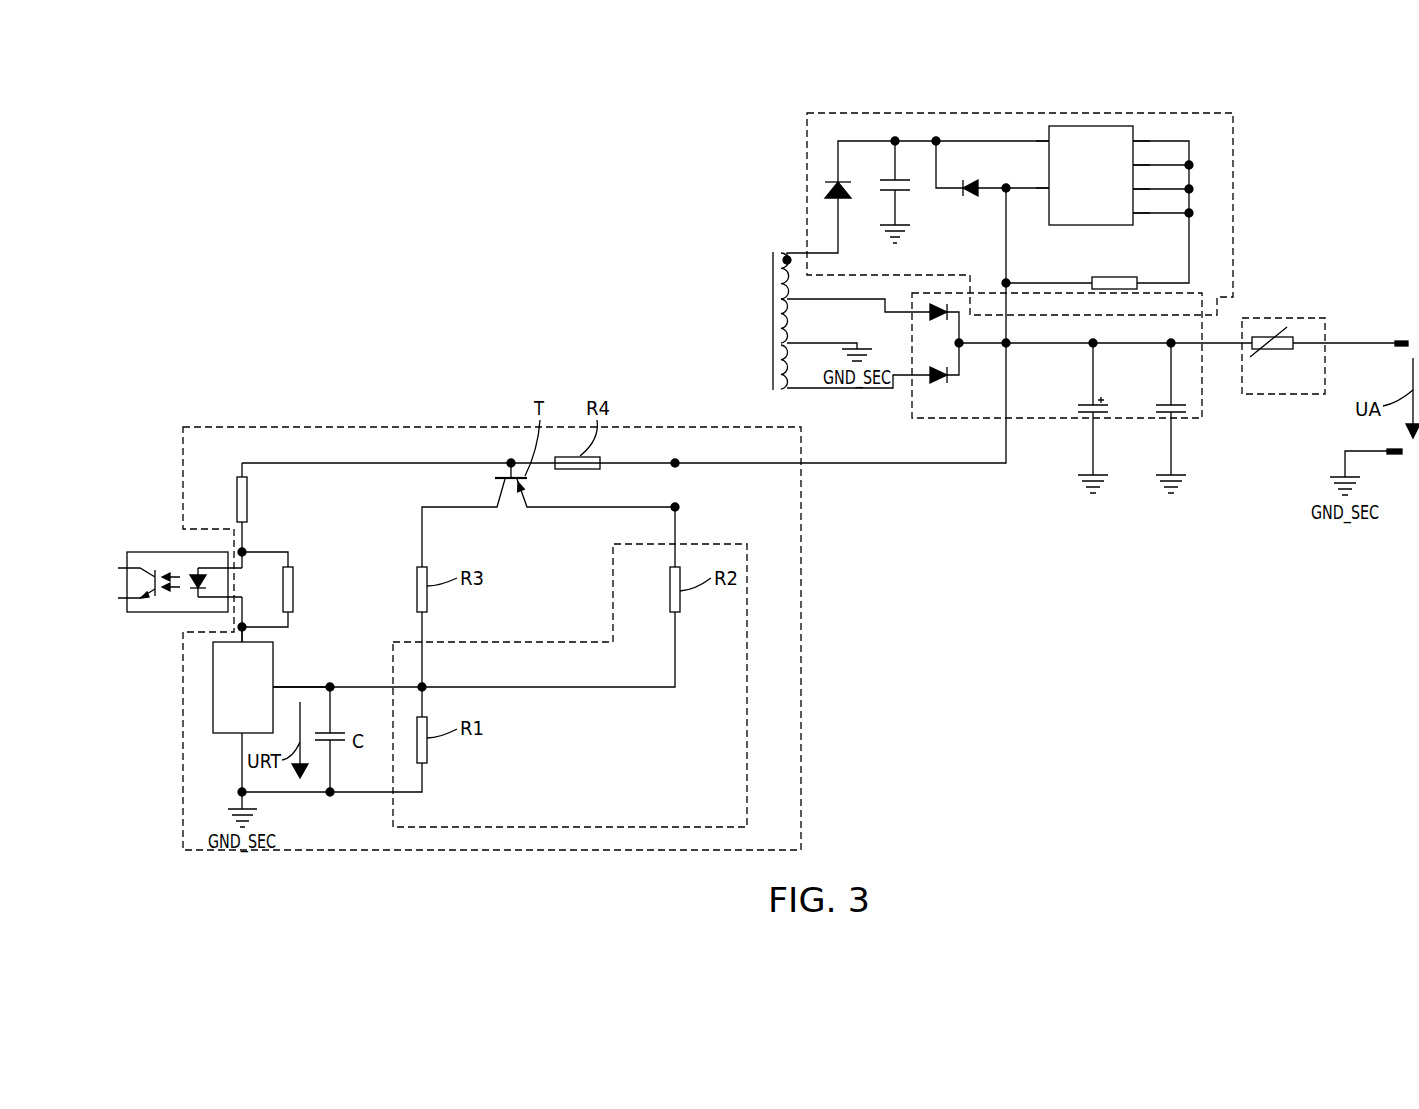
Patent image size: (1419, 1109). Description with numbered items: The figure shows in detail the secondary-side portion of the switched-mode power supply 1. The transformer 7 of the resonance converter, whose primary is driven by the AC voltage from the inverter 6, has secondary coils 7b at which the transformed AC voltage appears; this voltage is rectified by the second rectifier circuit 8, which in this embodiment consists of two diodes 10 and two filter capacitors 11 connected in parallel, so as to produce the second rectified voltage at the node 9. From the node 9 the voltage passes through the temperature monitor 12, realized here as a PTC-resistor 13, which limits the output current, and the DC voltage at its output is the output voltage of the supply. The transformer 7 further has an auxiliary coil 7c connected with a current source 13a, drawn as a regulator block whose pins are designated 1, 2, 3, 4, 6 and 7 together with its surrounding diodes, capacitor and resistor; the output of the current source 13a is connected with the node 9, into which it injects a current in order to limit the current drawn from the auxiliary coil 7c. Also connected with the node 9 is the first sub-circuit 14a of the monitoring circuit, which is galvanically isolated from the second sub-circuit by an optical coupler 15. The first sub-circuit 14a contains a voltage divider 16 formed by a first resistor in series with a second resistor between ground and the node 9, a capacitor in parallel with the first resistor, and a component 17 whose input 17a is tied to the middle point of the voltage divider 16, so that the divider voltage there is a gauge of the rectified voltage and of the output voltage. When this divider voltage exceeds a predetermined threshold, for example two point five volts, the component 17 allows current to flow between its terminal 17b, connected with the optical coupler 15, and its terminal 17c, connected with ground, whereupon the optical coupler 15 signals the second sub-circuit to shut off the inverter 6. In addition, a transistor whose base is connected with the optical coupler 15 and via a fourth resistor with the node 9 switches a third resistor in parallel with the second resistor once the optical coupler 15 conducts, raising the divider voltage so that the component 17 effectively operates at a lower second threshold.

The switched-mode power supply 1 is at (1039, 129).
The VOUT output pin of voltage regulator 2 is at (1141, 129).
The VOUT output pin of voltage regulator 3 is at (1141, 154).
The ADJ adjust pin of voltage regulator 4 is at (1039, 178).
The inverter 6 is at (1141, 178).
The transformer 7 is at (1141, 202).
The secondary coils 7b is at (773, 366).
The auxiliary coil 7c is at (775, 283).
The second rectifier circuit 8 is at (1020, 420).
The node 9 is at (1009, 348).
The diodes 10 is at (930, 369).
The filter capacitors 11 is at (1170, 404).
The temperature monitor 12 is at (1305, 316).
The PTC-resistor 13 is at (1265, 337).
The current source 13a is at (986, 225).
The first sub-circuit 14a is at (381, 425).
The optical coupler 15 is at (175, 572).
The voltage divider 16 is at (747, 690).
The component 17 is at (225, 687).
The input 17a is at (274, 687).
The terminal 17b is at (237, 640).
The terminal 17c is at (232, 736).